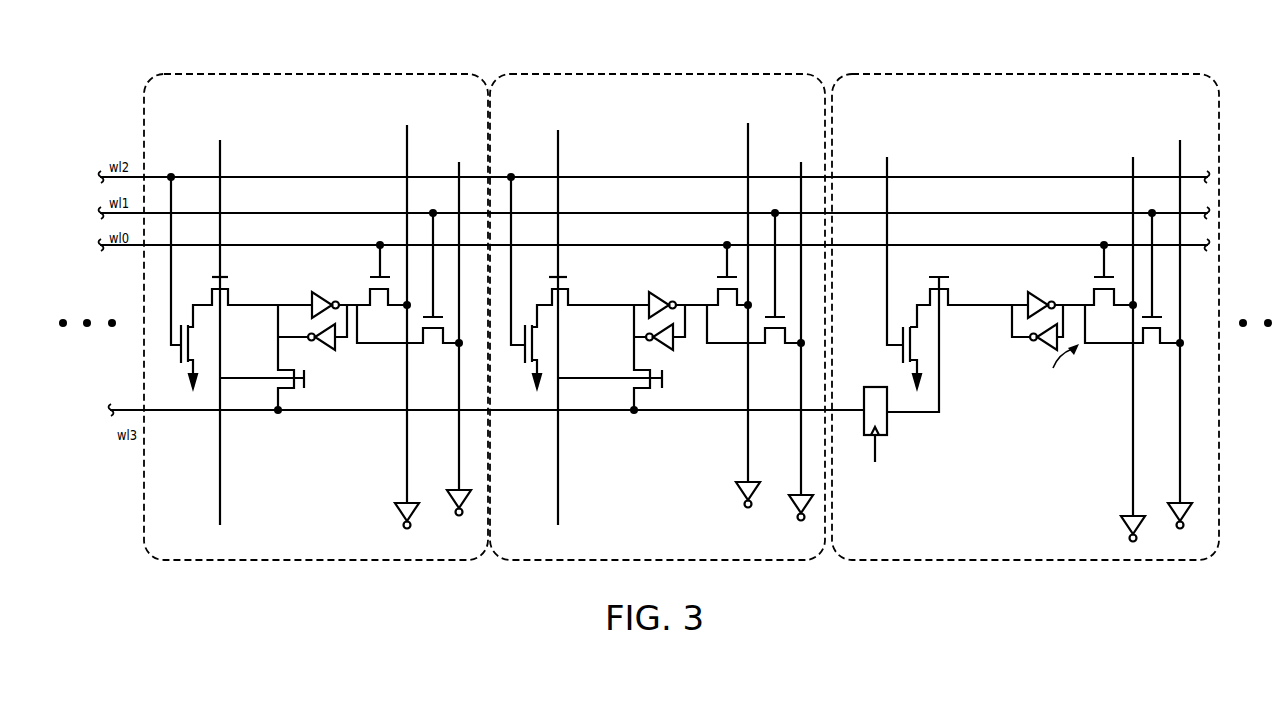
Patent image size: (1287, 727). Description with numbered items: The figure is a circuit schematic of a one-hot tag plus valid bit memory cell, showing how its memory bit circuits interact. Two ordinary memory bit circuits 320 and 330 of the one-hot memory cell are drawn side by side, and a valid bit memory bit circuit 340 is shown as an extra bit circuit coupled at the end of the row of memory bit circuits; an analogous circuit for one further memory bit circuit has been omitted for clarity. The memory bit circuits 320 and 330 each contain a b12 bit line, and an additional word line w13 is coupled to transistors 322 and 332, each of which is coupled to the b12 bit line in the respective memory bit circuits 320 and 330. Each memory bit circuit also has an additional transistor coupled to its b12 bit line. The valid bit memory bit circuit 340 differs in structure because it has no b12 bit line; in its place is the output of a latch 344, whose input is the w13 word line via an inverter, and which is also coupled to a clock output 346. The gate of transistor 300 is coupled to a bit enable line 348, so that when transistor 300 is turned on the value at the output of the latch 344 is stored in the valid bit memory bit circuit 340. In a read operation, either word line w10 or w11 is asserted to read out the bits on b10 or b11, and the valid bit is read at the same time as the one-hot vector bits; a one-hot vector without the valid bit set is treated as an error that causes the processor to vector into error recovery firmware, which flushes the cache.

The memory bit circuit 320 is at (338, 72).
The memory bit circuit 330 is at (656, 72).
The valid bit memory bit circuit 340 is at (1058, 72).
The transistor 322 is at (205, 291).
The transistor 332 is at (544, 291).
The transistor 300 is at (913, 347).
The latch 344 is at (887, 423).
The clock output 346 is at (877, 455).
The bit enable line 348 is at (887, 168).